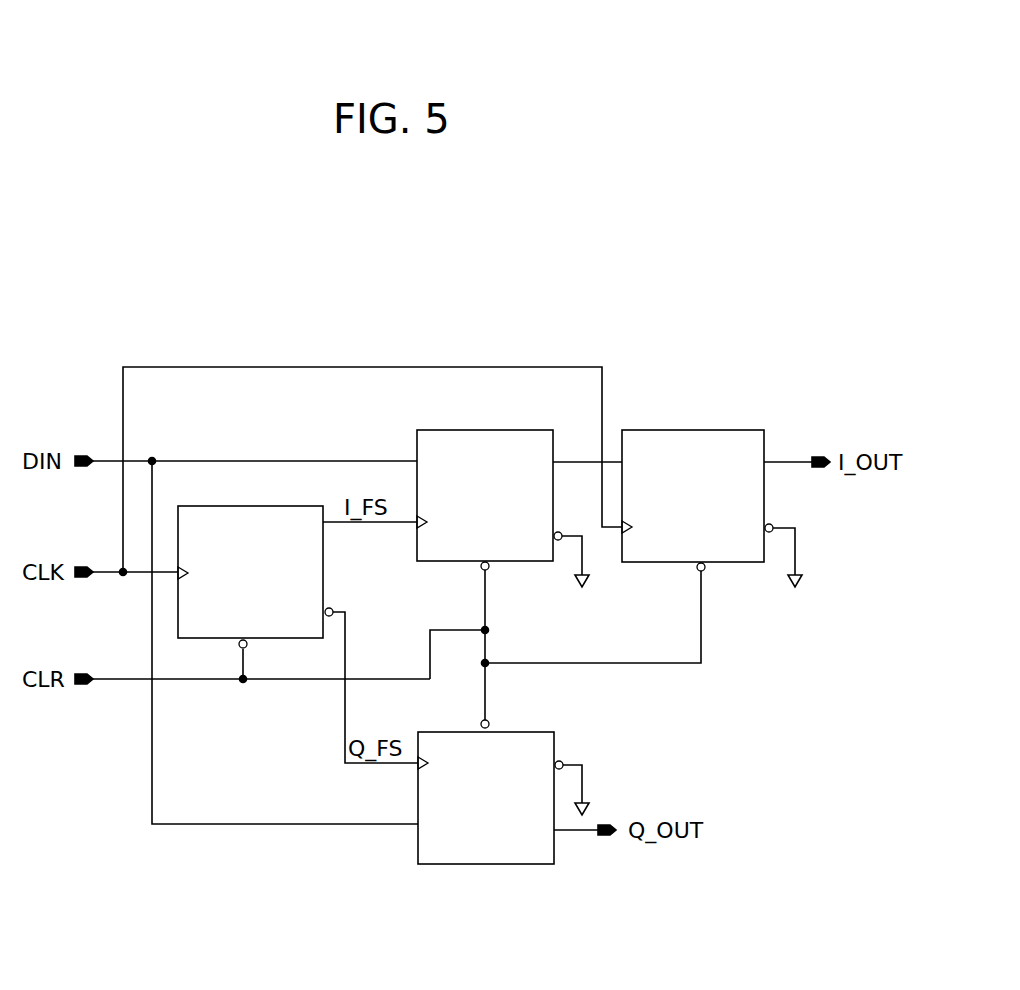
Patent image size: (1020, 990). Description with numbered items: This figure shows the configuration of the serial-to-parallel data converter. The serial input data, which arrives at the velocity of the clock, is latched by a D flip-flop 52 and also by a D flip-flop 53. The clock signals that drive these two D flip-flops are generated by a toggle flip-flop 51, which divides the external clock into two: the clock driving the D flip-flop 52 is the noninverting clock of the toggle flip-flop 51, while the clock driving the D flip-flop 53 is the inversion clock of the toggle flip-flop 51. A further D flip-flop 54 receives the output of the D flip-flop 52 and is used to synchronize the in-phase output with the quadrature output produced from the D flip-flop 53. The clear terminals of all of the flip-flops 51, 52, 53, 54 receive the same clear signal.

The toggle flip-flop 51 is at (247, 506).
The D flip-flop 52 is at (520, 430).
The D flip-flop 53 is at (520, 732).
The D flip-flop 54 is at (730, 430).